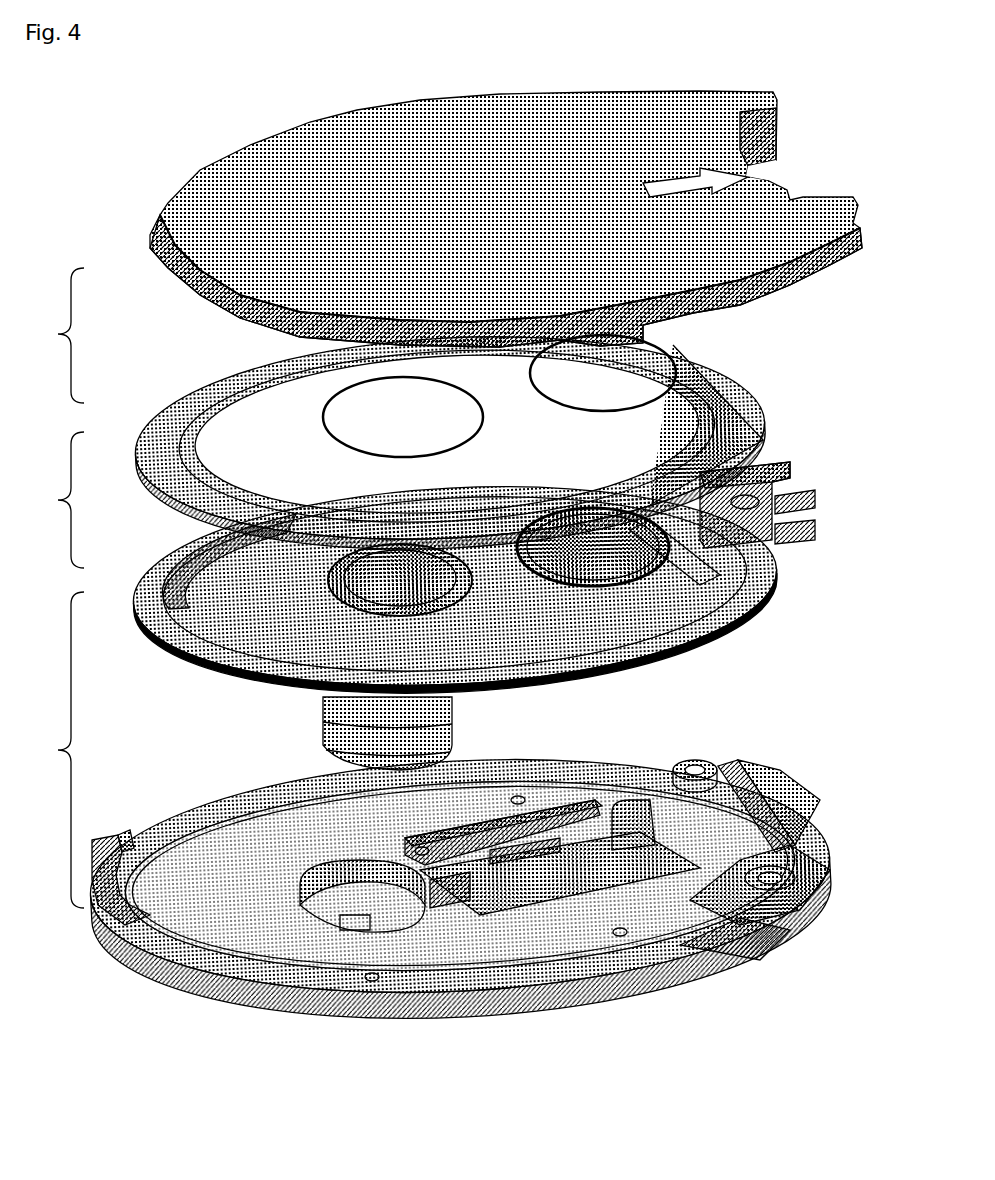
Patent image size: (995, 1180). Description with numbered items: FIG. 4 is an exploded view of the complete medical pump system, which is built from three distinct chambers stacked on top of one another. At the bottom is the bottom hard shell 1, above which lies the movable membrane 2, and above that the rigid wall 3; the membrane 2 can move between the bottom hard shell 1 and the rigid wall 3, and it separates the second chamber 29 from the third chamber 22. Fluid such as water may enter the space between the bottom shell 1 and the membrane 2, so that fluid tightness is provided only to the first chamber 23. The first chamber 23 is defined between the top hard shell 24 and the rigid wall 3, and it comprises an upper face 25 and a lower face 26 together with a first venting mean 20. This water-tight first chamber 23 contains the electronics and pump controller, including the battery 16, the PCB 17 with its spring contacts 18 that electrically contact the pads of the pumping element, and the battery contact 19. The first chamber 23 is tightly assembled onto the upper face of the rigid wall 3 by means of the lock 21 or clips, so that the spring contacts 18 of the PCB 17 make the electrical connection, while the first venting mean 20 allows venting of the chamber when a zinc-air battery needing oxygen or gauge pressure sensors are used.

The bottom hard shell 1 is at (782, 165).
The movable membrane 2 is at (748, 397).
The rigid wall 3 is at (765, 597).
The battery 16 is at (463, 731).
The PCB (Printed Circuit Board) 17 is at (723, 893).
The spring contacts 18 is at (727, 935).
The battery contact 19 is at (364, 914).
The first venting mean 20 is at (708, 760).
The lock 21 is at (768, 802).
The third chamber 22 is at (51, 335).
The first chamber 23 is at (51, 750).
The top hard shell 24 is at (322, 776).
The upper face of the first chamber 25 is at (305, 966).
The lower face of the first chamber 26 is at (210, 679).
The second chamber 29 is at (51, 500).